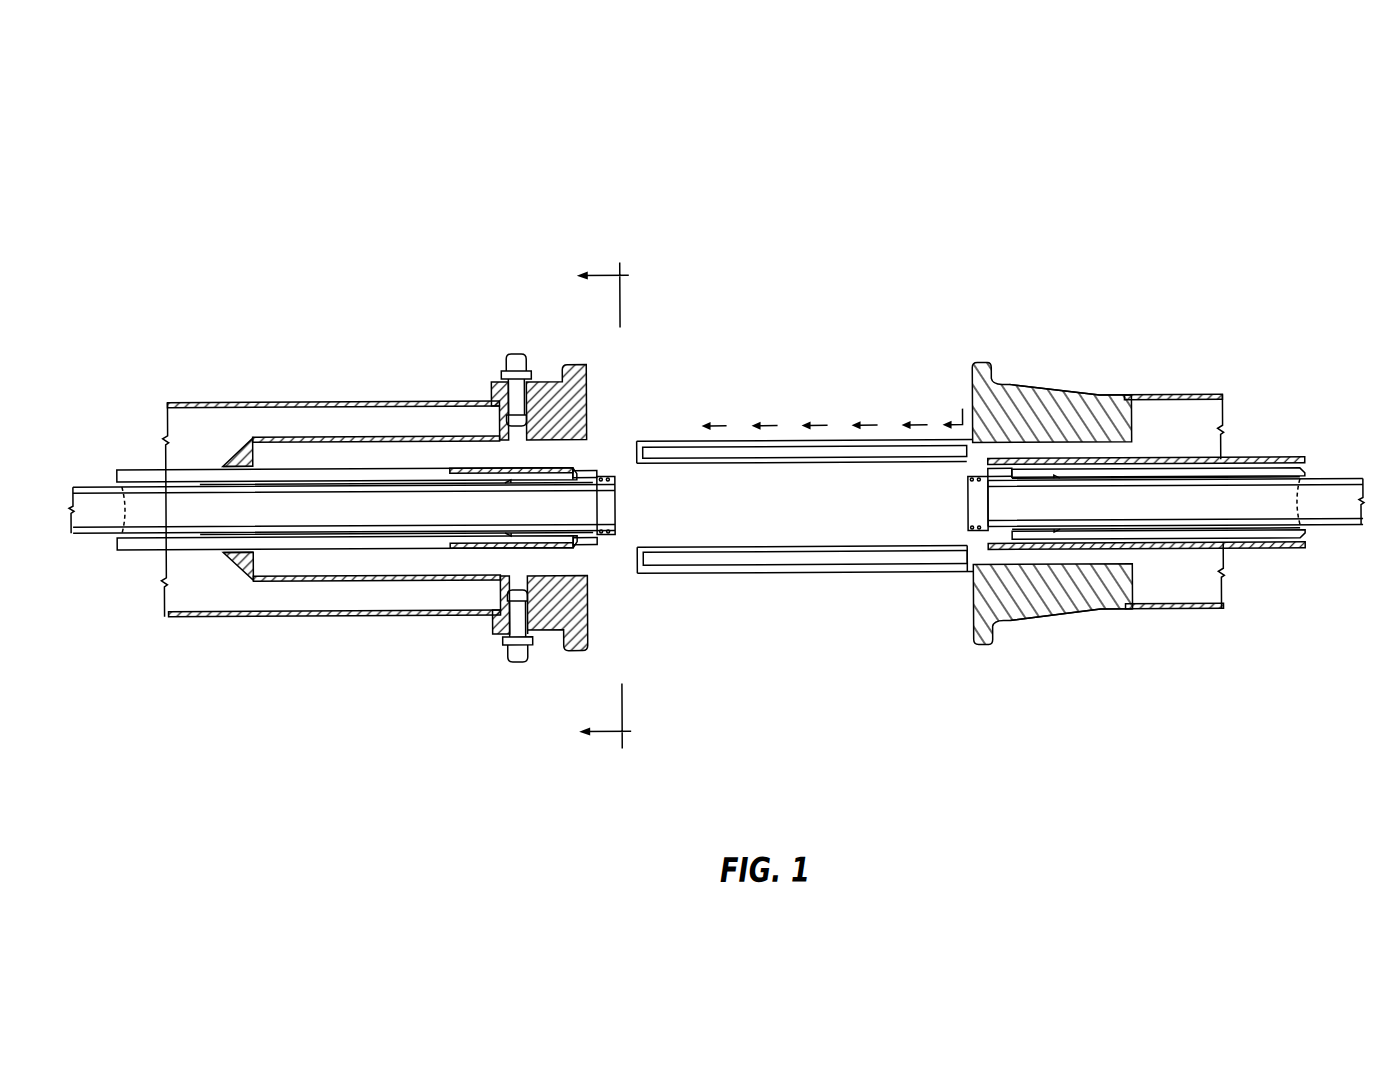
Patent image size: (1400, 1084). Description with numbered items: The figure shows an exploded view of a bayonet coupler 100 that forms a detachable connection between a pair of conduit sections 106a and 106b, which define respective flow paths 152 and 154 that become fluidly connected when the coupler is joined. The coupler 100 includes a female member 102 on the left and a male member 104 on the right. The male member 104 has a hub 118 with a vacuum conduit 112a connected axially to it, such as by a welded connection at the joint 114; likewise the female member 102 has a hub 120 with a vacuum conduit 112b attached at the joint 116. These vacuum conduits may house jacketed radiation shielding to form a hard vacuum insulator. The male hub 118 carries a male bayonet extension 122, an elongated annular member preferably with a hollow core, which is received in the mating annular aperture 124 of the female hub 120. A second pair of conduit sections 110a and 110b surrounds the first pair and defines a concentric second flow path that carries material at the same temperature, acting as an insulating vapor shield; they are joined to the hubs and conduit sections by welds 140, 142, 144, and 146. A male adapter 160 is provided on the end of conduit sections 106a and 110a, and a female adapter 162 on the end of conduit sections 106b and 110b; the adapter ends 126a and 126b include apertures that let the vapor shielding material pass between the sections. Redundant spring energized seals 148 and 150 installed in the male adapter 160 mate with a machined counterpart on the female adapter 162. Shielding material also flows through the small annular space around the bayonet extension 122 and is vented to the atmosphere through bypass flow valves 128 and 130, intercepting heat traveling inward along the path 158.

The bayonet coupler 100 is at (800, 204).
The female member 102 is at (366, 354).
The male member 104 is at (1095, 296).
The conduit section 106a is at (82, 484).
The conduit section 106b is at (1332, 482).
The conduit section 110a is at (127, 467).
The conduit section 110b is at (1287, 471).
The vacuum conduit 112a is at (1180, 397).
The vacuum conduit 112b is at (193, 400).
The joint 114 is at (1125, 397).
The joint 116 is at (490, 392).
The hub 118 is at (982, 364).
The hub 120 is at (573, 364).
The male bayonet extension 122 is at (742, 441).
The mating annular aperture 124 is at (428, 464).
The end of adapter 126a is at (597, 471).
The end of adapter 126b is at (967, 470).
The bypass flow valve 128 is at (510, 355).
The bypass flow valve 130 is at (528, 654).
The weld 140 is at (510, 488).
The weld 142 is at (555, 467).
The weld 144 is at (1073, 482).
The weld 146 is at (1040, 482).
The spring energized seal 148 is at (600, 543).
The spring energized seal 150 is at (608, 541).
The flow path 152 is at (380, 519).
The flow path 154 is at (1197, 514).
The path 158 is at (817, 424).
The male adapter 160 is at (590, 465).
The female adapter 162 is at (968, 570).